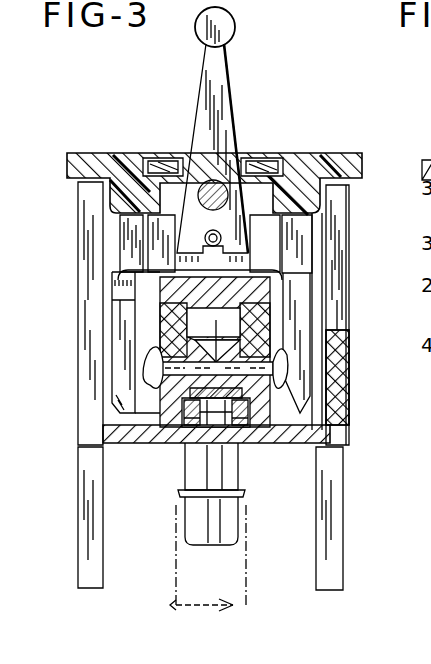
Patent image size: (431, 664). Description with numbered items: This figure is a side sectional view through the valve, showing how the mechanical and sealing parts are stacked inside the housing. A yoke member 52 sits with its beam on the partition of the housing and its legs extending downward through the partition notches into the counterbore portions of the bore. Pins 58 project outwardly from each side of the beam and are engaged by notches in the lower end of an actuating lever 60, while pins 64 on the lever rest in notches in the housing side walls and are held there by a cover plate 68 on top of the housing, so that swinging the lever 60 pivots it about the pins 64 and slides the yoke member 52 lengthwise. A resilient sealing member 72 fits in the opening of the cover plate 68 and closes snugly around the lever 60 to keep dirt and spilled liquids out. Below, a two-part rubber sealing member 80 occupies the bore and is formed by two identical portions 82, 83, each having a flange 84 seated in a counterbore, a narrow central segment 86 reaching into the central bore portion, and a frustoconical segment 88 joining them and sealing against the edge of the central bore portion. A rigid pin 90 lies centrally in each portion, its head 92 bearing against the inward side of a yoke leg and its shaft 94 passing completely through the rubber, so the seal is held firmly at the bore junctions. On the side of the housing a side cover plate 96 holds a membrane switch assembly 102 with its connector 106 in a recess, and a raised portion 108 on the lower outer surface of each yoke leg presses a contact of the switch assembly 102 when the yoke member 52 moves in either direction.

The yoke member 52 is at (298, 308).
The pins 58 is at (275, 181).
The actuating lever 60 is at (228, 74).
The pins 64 is at (205, 186).
The cover plate 68 is at (116, 170).
The sealing member 72 is at (222, 232).
The two-part rubber sealing member 80 is at (254, 417).
The sealing member portion 82 is at (258, 512).
The sealing member portion 83 is at (168, 382).
The flange 84 is at (252, 590).
The central segment 86 is at (190, 378).
The frustoconical segment 88 is at (215, 380).
The rigid pin 90 is at (245, 413).
The head 92 is at (243, 368).
The shaft 94 is at (270, 362).
The side cover plate 96 is at (338, 234).
The membrane switch assembly 102 is at (337, 422).
The connector 106 is at (332, 524).
The raised portion 108 is at (336, 388).